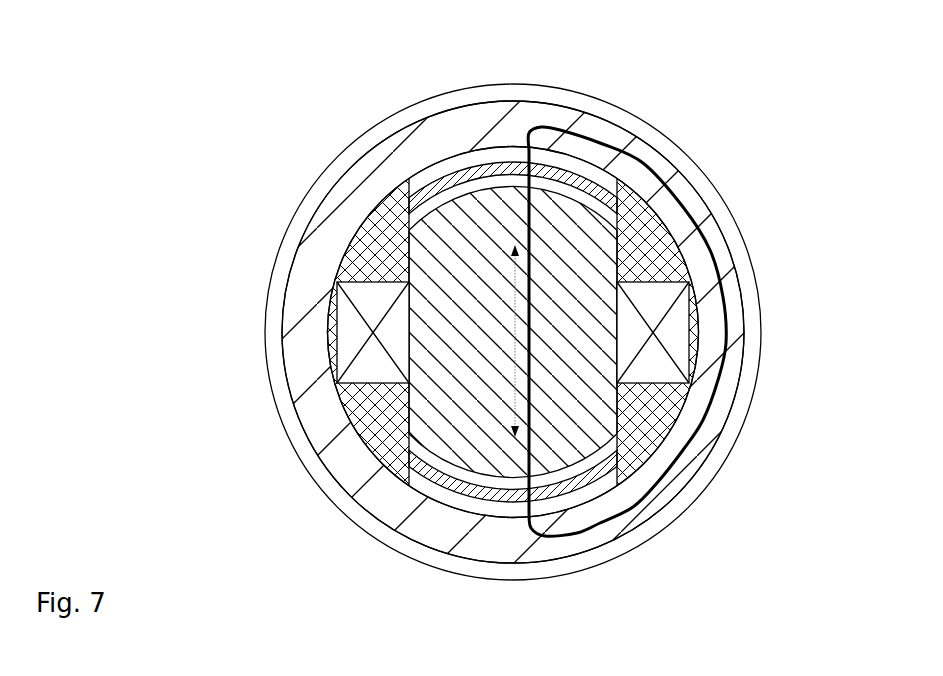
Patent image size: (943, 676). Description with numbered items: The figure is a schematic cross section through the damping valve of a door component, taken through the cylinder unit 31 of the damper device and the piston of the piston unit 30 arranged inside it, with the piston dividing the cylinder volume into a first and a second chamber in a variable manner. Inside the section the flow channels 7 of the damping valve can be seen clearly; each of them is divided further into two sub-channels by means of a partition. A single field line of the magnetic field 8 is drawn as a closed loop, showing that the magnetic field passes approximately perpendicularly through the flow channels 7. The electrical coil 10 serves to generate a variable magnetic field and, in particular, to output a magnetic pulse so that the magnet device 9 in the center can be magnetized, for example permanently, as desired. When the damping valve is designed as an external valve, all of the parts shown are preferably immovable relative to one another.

The flow channels 7 is at (453, 190).
The magnetic field 8 is at (643, 164).
The magnet device 9 is at (578, 232).
The electrical coil 10 is at (675, 337).
The piston unit 30 is at (338, 207).
The cylinder unit 31 is at (265, 286).